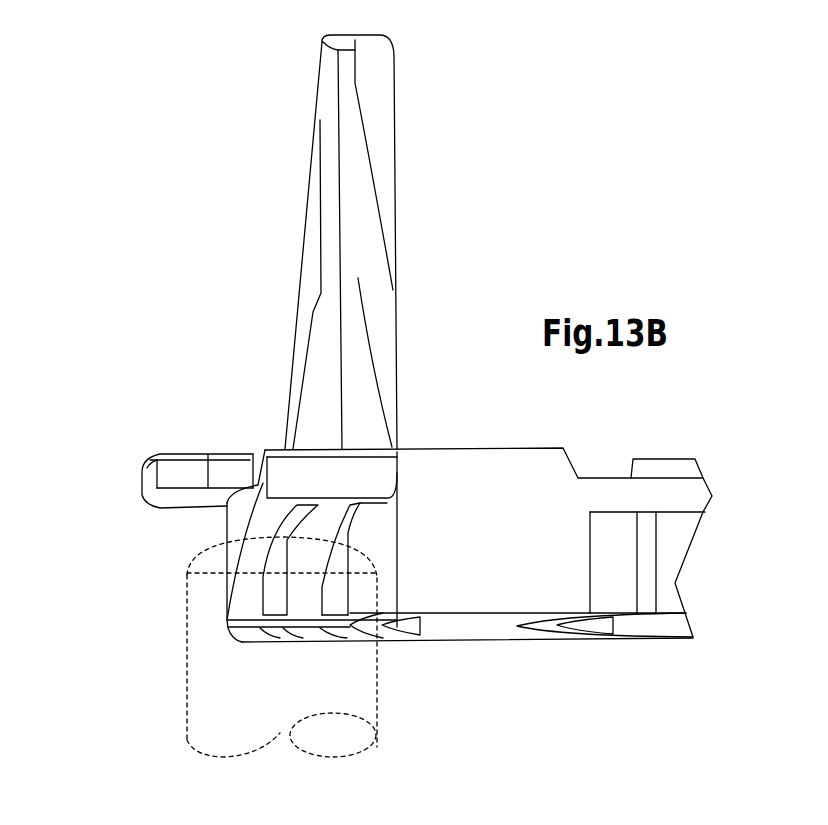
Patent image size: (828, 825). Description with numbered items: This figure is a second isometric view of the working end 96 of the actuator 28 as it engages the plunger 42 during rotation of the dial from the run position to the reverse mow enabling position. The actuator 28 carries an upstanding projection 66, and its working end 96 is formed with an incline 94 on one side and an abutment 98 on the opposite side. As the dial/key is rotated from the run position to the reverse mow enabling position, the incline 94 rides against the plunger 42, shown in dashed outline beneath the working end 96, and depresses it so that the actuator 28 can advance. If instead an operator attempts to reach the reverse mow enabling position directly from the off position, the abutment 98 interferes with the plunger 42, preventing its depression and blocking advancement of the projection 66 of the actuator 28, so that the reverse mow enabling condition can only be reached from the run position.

The projection 66 is at (373, 72).
The actuator 28 is at (537, 562).
The plunger 42 is at (375, 678).
The incline 94 is at (253, 552).
The working end 96 is at (242, 508).
The abutment 98 is at (227, 523).